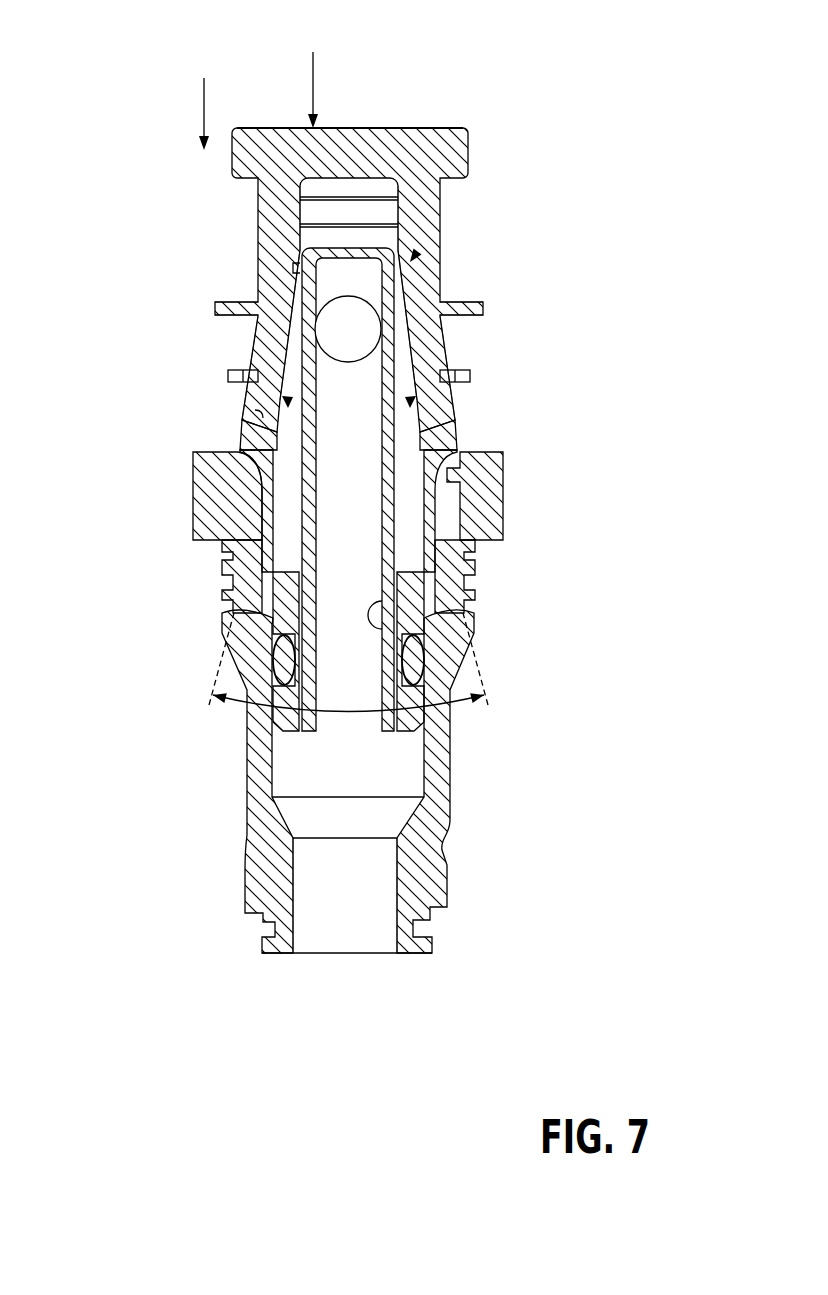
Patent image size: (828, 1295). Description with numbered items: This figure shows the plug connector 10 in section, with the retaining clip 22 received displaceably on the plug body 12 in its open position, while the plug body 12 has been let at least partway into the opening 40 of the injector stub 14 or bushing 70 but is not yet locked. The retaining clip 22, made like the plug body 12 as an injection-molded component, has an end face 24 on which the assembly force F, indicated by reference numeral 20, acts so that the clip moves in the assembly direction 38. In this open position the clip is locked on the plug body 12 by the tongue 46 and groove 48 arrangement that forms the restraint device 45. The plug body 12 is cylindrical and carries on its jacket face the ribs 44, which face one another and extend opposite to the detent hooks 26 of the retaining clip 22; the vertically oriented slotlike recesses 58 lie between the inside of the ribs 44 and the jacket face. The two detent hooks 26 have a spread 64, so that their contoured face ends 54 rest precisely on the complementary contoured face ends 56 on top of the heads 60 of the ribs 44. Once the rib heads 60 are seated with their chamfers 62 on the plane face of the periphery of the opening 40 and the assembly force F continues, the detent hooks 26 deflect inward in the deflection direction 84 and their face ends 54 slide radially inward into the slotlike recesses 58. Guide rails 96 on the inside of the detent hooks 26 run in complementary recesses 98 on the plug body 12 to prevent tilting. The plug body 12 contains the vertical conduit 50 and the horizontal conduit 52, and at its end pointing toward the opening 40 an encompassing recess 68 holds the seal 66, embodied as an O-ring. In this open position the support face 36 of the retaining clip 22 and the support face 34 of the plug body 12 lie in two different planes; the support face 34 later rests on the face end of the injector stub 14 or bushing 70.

The plug connector 10 is at (350, 485).
The plug body 12 is at (350, 574).
The injector stub 14 is at (288, 781).
The bushing 70 is at (260, 783).
The assembly force 20 is at (312, 73).
The retaining clip 22 is at (287, 217).
The end face 24 is at (385, 127).
The detent hooks 26 is at (272, 368).
The support face 34 is at (468, 375).
The support face 36 is at (236, 312).
The assembly direction 38 is at (203, 113).
The opening 40 is at (412, 483).
The ribs 44 is at (250, 580).
The restraint device 45 is at (414, 256).
The tongue 46 is at (290, 273).
The groove 48 is at (428, 285).
The vertical conduit 50 is at (385, 618).
The horizontal conduit 52 is at (350, 332).
The contoured face ends 54 is at (245, 438).
The contoured face ends 56 is at (245, 420).
The slotlike recesses 58 is at (288, 512).
The heads 60 is at (243, 462).
The chamfers 62 is at (262, 417).
The spread 64 is at (350, 733).
The seal 66 is at (272, 658).
The recess 68 is at (233, 623).
The deflection direction 84 is at (445, 410).
The guide rails 96 is at (300, 300).
The recesses 98 is at (262, 498).
The assembly force F is at (316, 75).